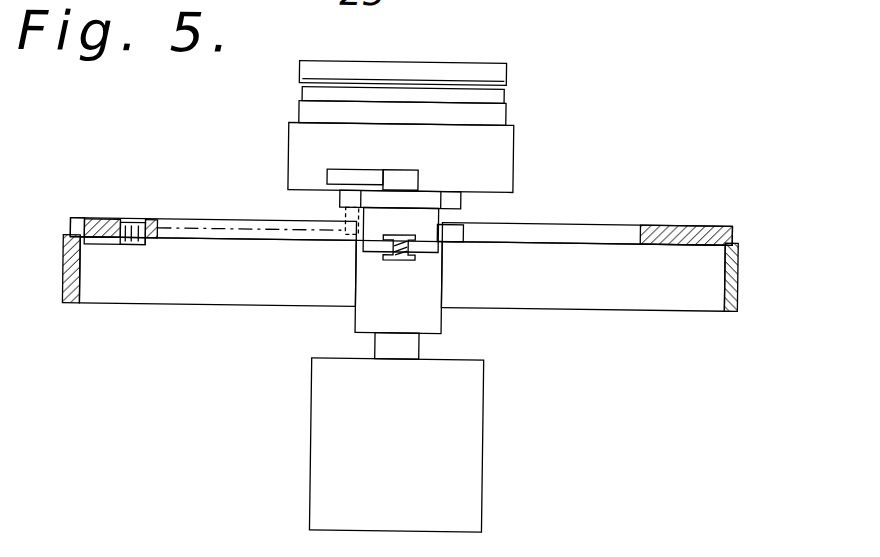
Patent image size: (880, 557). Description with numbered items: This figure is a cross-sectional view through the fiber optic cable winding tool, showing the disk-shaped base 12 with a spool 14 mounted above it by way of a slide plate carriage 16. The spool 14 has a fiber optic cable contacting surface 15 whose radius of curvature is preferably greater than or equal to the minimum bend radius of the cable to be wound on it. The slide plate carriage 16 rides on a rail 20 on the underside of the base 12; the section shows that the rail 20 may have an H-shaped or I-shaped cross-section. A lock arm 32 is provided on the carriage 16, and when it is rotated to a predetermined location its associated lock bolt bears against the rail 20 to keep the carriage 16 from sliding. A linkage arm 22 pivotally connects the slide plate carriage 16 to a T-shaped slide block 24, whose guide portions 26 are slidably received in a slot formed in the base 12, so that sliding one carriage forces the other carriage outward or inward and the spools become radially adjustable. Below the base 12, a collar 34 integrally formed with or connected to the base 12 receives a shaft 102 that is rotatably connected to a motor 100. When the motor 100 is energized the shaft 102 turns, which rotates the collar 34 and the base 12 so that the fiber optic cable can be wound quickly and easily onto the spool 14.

The disk-shaped base 12 is at (702, 229).
The spool 14 is at (467, 73).
The fiber optic cable contacting surface 15 is at (300, 93).
The slide plate carriage 16 is at (437, 203).
The rail 20 is at (400, 260).
The linkage arm 22 is at (123, 246).
The T-shaped slide block 24 is at (98, 236).
The guide portion 26 is at (75, 224).
The lock arm 32 is at (403, 183).
The collar 34 is at (373, 313).
The motor 100 is at (447, 435).
The shaft 102 is at (393, 346).